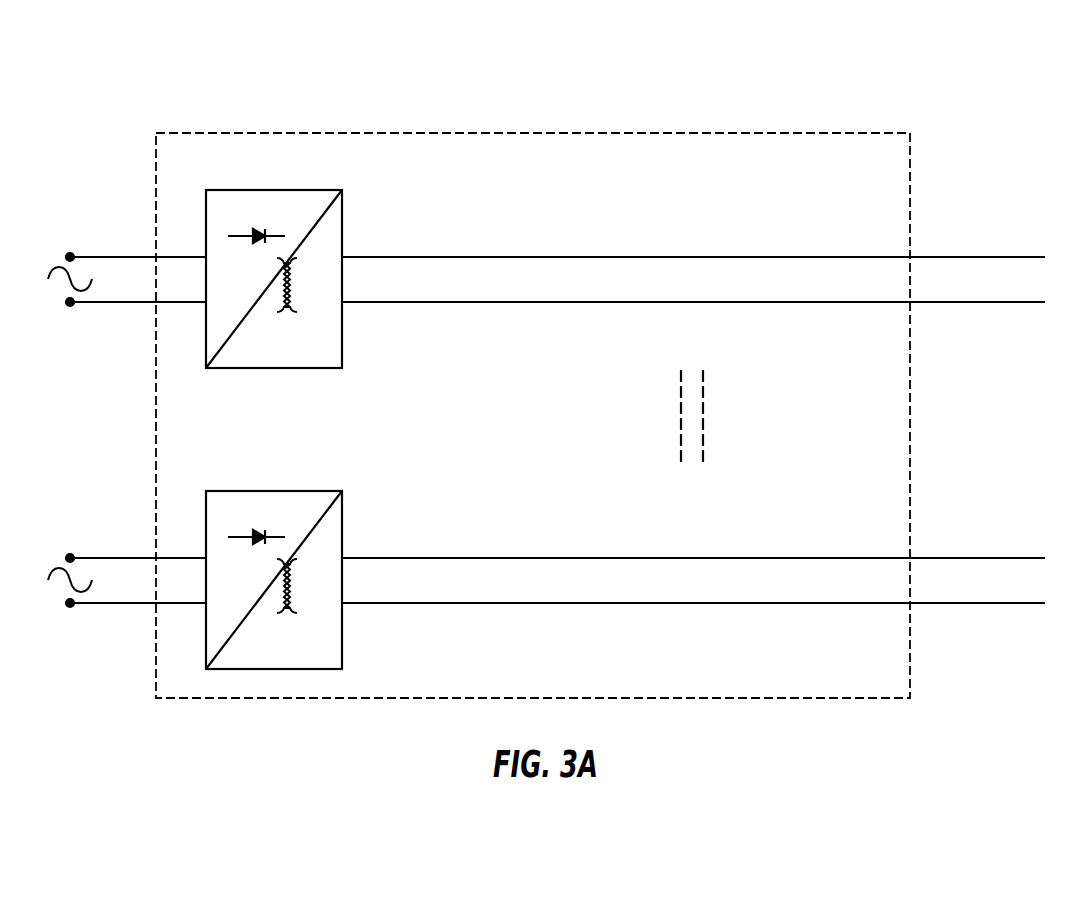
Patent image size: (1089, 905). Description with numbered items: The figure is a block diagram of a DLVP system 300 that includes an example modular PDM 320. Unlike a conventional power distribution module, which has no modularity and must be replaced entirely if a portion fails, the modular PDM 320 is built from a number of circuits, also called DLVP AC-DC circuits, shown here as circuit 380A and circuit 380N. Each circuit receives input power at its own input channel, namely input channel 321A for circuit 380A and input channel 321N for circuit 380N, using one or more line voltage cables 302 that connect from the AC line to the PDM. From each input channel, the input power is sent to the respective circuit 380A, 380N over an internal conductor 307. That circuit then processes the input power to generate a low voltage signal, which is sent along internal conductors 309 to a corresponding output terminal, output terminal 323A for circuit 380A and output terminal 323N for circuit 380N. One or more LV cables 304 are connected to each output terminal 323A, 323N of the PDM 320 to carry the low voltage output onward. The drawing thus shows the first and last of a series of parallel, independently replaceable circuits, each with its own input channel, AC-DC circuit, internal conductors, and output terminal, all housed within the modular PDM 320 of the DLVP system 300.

The DLVP system 300 is at (946, 70).
The modular PDM 320 is at (616, 126).
The line voltage cables 302 is at (112, 258).
The internal conductor 307 is at (197, 258).
The input channel 321A is at (155, 301).
The input channel 321N is at (126, 553).
The circuit 380A is at (349, 219).
The circuit 380N is at (325, 566).
The internal conductors 309 is at (538, 258).
The output terminal 323A is at (910, 301).
The output terminal 323N is at (942, 553).
The LV cables 304 is at (983, 258).